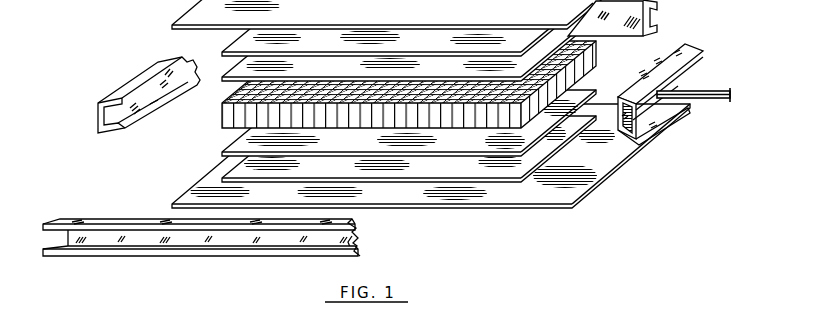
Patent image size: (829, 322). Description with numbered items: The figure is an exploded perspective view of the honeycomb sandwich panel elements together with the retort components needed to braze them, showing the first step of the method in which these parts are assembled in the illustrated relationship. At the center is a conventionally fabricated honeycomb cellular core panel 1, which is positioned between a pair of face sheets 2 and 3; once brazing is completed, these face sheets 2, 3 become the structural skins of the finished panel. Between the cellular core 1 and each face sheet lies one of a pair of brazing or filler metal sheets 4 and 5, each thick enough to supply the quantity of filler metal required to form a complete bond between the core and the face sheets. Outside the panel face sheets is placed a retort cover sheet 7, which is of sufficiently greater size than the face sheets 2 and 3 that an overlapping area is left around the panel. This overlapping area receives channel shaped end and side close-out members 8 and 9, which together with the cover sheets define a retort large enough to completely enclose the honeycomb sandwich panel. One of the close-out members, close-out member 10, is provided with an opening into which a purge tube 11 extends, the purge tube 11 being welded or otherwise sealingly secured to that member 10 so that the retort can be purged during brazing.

The honeycomb cellular core panel 1 is at (230, 116).
The face sheet 2 is at (409, 28).
The face sheet 3 is at (409, 149).
The brazing or filler metal sheet 4 is at (409, 48).
The brazing or filler metal sheet 5 is at (409, 123).
The retort cover sheet 7 is at (496, 207).
The channel shaped close-out member 8 is at (140, 88).
The channel shaped close-out member 9 is at (98, 222).
The close-out member 10 is at (693, 46).
The purge tube 11 is at (712, 93).